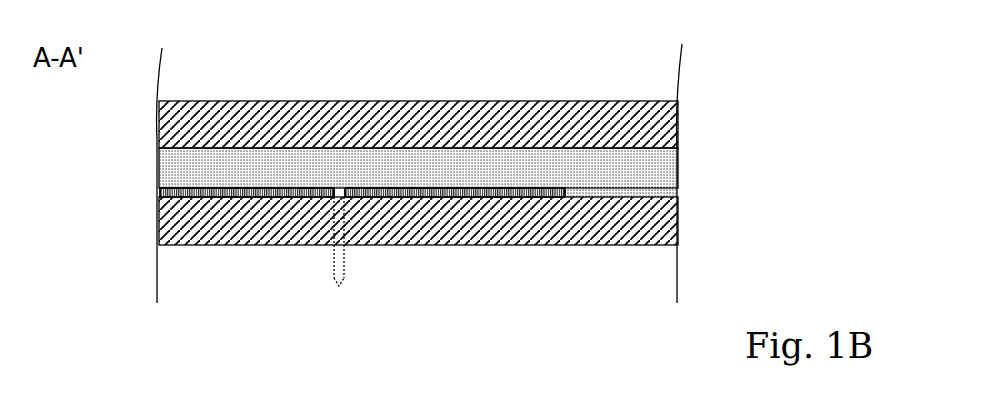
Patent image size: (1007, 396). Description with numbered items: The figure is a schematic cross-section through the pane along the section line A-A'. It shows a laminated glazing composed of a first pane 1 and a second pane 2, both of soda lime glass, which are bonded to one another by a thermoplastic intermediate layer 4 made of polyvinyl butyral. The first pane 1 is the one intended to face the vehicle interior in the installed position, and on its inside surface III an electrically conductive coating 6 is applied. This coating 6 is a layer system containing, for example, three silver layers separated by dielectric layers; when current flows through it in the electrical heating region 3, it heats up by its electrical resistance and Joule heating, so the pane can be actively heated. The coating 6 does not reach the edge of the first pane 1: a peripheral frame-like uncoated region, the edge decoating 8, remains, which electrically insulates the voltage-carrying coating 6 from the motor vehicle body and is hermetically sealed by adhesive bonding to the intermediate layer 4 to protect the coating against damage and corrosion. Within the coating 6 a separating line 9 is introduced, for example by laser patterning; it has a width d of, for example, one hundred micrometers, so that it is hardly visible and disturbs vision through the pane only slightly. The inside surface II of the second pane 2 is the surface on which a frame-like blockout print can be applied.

The first pane 1 is at (618, 225).
The second pane 2 is at (438, 121).
The electrical heating region 3 is at (225, 192).
The thermoplastic intermediate layer 4 is at (623, 170).
The electrically conductive coating 6 is at (258, 190).
The edge decoating 8 is at (579, 182).
The separating line 9 is at (339, 182).
The width of the separating line d is at (338, 258).
The inside surface of the second pane II is at (654, 192).
The inside surface of the first pane III is at (669, 151).